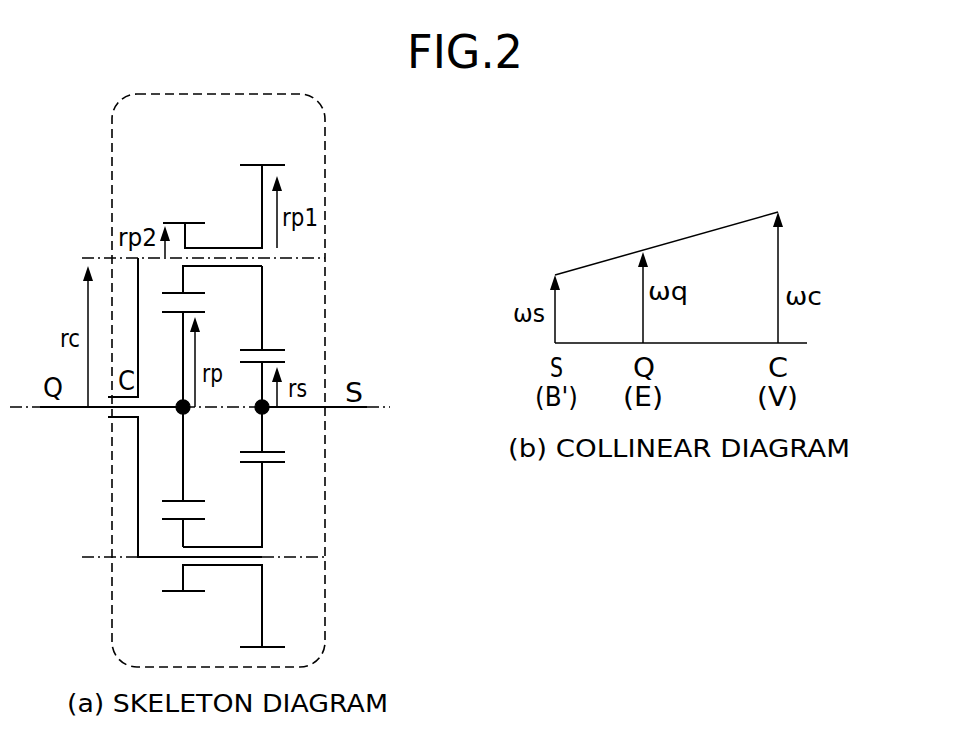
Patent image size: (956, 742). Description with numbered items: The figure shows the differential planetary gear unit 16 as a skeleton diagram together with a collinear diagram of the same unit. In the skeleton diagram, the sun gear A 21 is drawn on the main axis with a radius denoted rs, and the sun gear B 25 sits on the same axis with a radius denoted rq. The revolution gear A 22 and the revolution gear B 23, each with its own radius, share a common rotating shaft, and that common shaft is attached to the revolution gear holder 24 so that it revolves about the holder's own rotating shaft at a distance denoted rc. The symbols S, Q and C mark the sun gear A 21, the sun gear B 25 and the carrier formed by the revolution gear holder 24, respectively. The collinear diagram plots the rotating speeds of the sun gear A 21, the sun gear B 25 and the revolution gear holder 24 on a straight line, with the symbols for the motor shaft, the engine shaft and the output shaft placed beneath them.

The differential planetary gear unit 16 is at (112, 135).
The sun gear A 21 is at (262, 433).
The revolution gear A 22 is at (262, 307).
The revolution gear B 23 is at (167, 223).
The revolution gear holder 24 is at (137, 517).
The sun gear B 25 is at (183, 433).